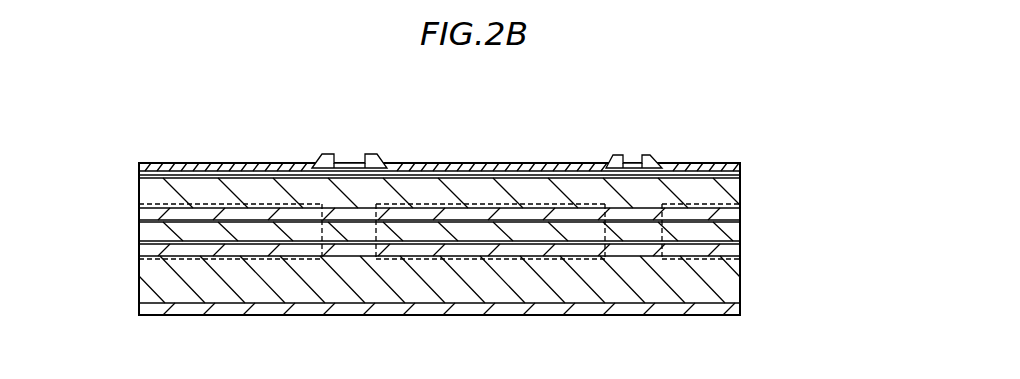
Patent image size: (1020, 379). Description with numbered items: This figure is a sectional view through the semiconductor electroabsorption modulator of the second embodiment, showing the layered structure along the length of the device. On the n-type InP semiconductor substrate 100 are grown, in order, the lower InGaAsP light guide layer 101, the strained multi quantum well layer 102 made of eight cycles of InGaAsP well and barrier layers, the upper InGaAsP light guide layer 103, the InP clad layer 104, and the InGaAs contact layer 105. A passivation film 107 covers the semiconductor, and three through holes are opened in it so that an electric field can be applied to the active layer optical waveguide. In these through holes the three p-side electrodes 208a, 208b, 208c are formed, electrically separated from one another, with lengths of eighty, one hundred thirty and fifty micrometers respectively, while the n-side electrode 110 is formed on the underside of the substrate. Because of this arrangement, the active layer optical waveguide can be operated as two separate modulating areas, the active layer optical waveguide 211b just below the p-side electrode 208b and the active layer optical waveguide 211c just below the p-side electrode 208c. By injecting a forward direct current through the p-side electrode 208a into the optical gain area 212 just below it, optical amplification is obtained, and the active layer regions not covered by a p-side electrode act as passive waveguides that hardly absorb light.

The n-type InP semiconductor substrate 100 is at (735, 277).
The lower InGaAsP light guide layer 101 is at (735, 247).
The strained multi quantum well layer 102 is at (150, 232).
The upper InGaAsP light guide layer 103 is at (733, 215).
The InP clad layer 104 is at (733, 200).
The InGaAs contact layer 105 is at (741, 175).
The passivation film 107 is at (353, 163).
The n-side electrode 110 is at (460, 310).
The p-side electrode 208a is at (213, 165).
The p-side electrode 208b is at (458, 165).
The p-side electrode 208c is at (712, 163).
The active layer optical waveguide 211b is at (540, 263).
The active layer optical waveguide 211c is at (680, 263).
The optical gain area 212 is at (293, 262).